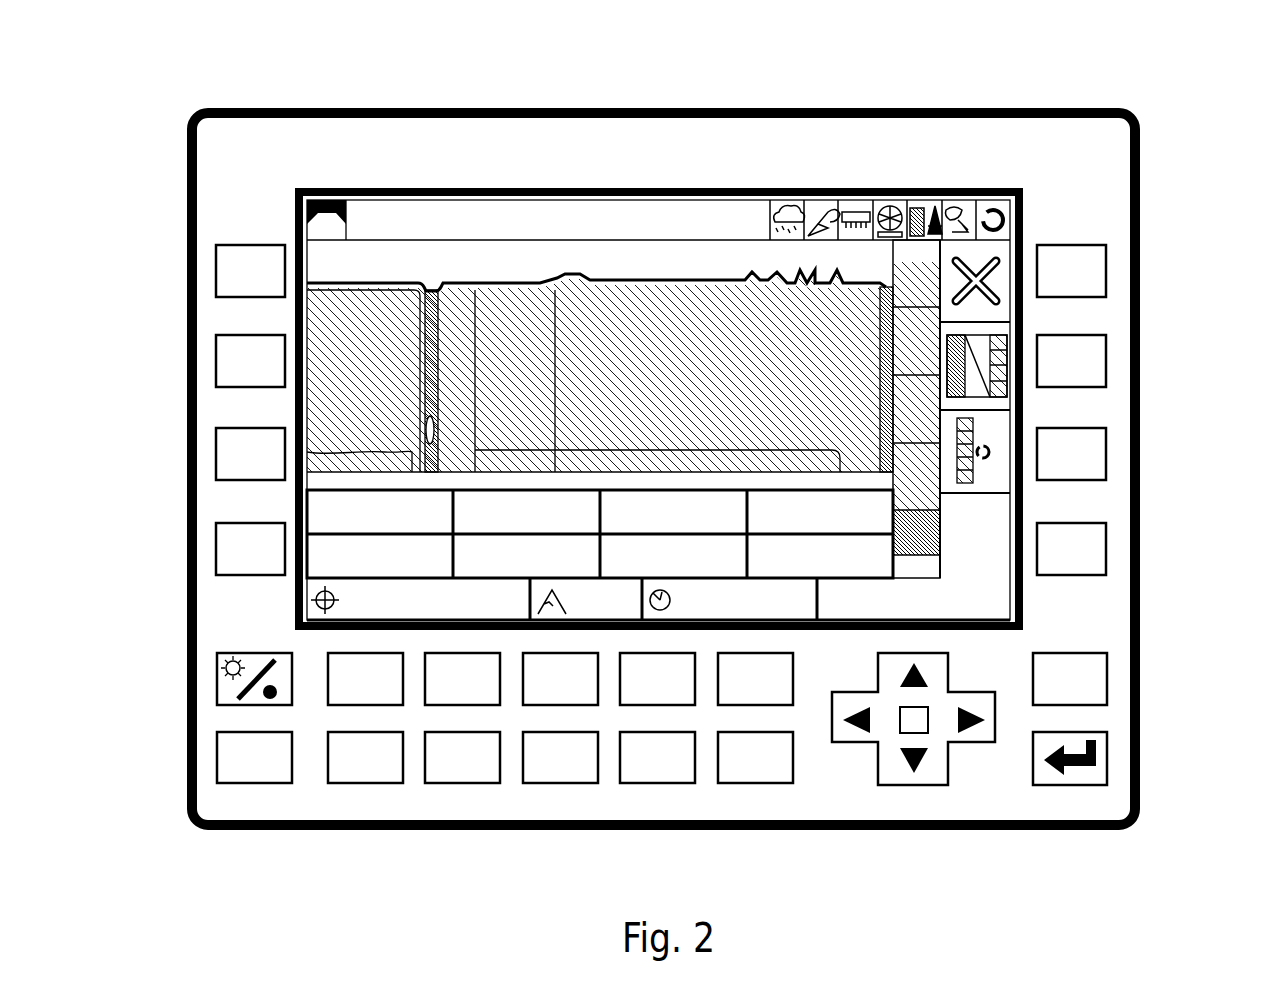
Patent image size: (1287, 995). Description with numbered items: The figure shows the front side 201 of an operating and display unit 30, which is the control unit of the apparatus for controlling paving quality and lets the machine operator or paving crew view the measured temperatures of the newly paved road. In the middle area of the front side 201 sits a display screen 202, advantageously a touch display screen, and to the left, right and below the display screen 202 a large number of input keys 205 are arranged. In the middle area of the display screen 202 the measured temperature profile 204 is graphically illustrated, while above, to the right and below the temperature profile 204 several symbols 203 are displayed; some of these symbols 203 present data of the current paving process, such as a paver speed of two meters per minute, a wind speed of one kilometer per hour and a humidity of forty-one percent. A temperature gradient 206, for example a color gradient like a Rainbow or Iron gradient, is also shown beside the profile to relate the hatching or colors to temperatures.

The operating and display unit 30 is at (1180, 92).
The front side 201 is at (1090, 201).
The display screen 202 is at (348, 178).
The symbols 203 is at (280, 605).
The temperature profile 204 is at (352, 333).
The input keys 205 is at (805, 772).
The temperature gradient 206 is at (920, 524).